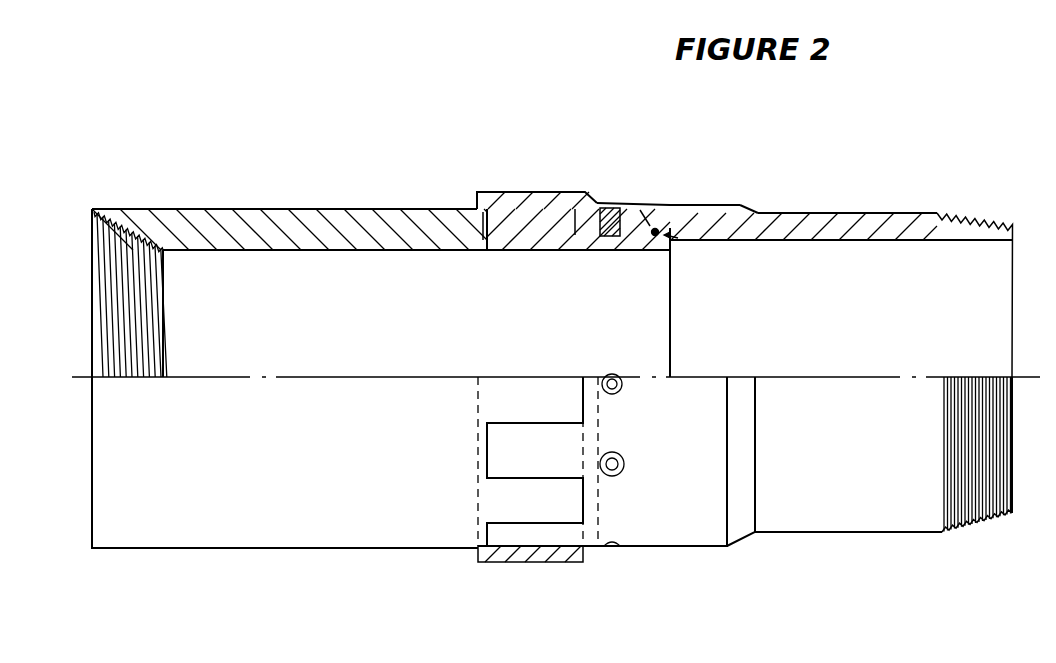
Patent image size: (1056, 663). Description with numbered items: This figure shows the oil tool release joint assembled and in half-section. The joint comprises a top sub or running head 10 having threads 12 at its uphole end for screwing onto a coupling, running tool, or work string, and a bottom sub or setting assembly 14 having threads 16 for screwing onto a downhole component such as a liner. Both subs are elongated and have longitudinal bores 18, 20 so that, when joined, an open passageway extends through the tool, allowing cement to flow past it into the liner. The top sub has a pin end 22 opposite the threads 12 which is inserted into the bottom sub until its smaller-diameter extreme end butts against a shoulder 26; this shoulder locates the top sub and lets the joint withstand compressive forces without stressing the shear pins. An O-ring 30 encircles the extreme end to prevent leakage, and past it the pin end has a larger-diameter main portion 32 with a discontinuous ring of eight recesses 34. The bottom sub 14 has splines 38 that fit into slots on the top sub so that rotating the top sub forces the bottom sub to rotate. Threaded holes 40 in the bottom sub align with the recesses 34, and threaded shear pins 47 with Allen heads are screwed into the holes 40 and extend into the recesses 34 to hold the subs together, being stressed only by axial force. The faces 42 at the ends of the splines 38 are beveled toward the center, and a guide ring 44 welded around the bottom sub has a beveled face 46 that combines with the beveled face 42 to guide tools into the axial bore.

The top sub 10 is at (312, 209).
The threads 12 is at (118, 288).
The bottom sub 14 is at (826, 210).
The threads 16 is at (975, 215).
The longitudinal bore 18 is at (382, 337).
The longitudinal bore 20 is at (840, 327).
The pin end 22 is at (720, 218).
The shoulder 26 is at (667, 246).
The O-ring 30 is at (668, 205).
The main portion 32 is at (551, 200).
The recesses 34 is at (645, 215).
The splines 38 is at (505, 455).
The threaded holes 40 is at (583, 215).
The beveled faces 42 is at (487, 250).
The guide ring 44 is at (576, 200).
The beveled face 46 is at (487, 215).
The shear pins 47 is at (610, 215).